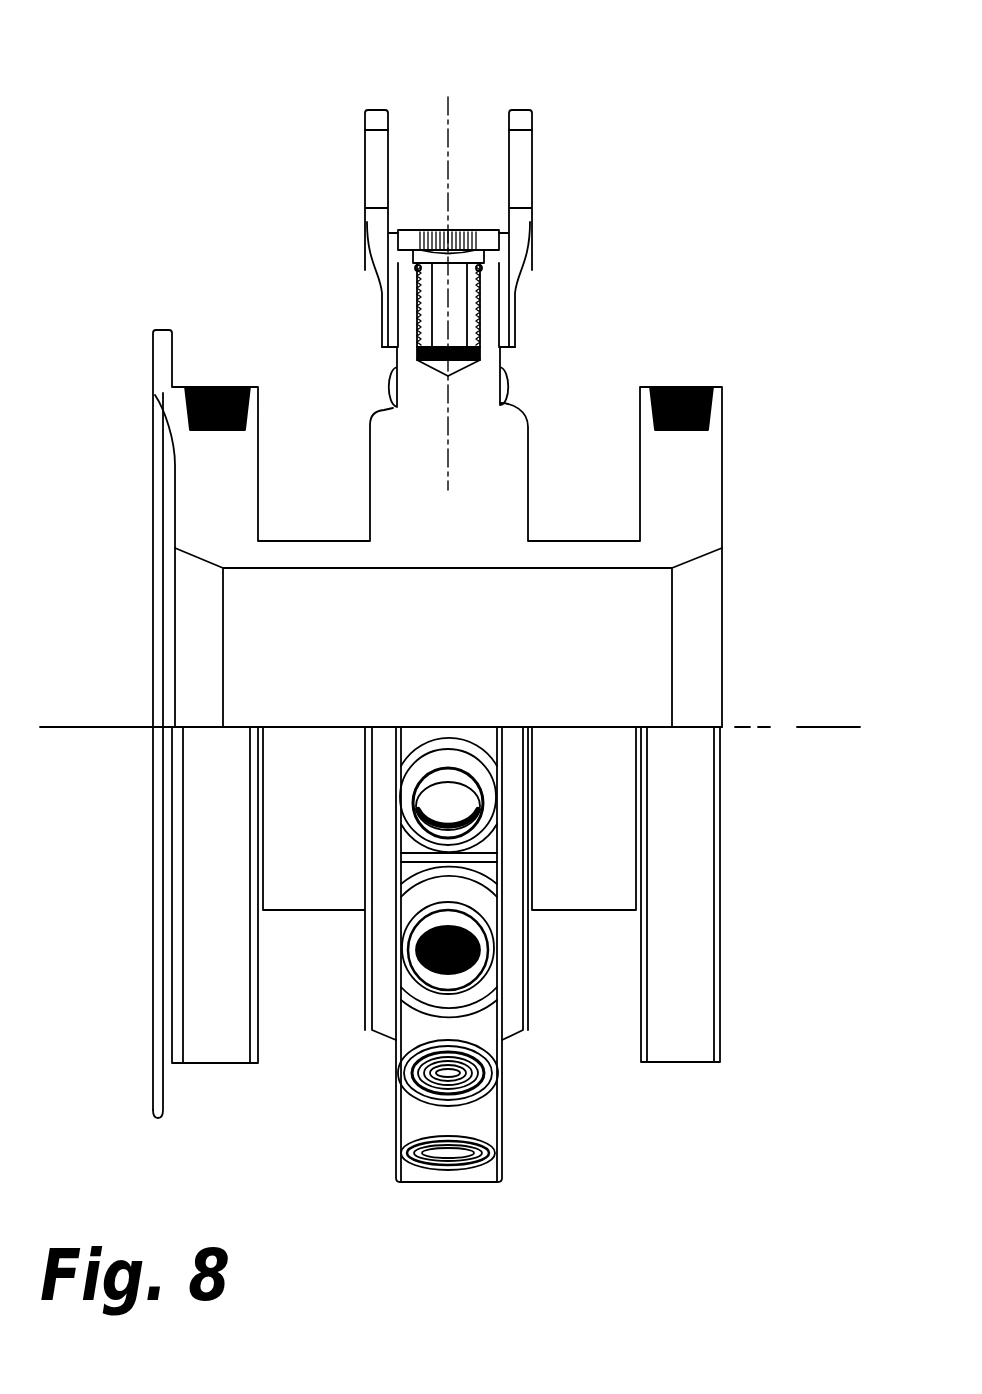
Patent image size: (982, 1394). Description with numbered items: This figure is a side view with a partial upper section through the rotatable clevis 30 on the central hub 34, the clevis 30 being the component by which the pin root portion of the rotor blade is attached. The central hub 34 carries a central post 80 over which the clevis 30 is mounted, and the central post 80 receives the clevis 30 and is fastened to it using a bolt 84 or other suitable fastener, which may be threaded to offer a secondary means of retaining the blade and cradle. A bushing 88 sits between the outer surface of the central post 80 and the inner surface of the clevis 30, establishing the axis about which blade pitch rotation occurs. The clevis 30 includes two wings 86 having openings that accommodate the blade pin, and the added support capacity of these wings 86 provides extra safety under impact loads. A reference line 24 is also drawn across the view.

The mounting surface line 24 is at (745, 727).
The clevis 30 is at (532, 174).
The central hub 34 is at (722, 468).
The central post 80 is at (395, 367).
The bolt 84 is at (412, 233).
The wings 86 is at (378, 110).
The bushing 88 is at (503, 383).